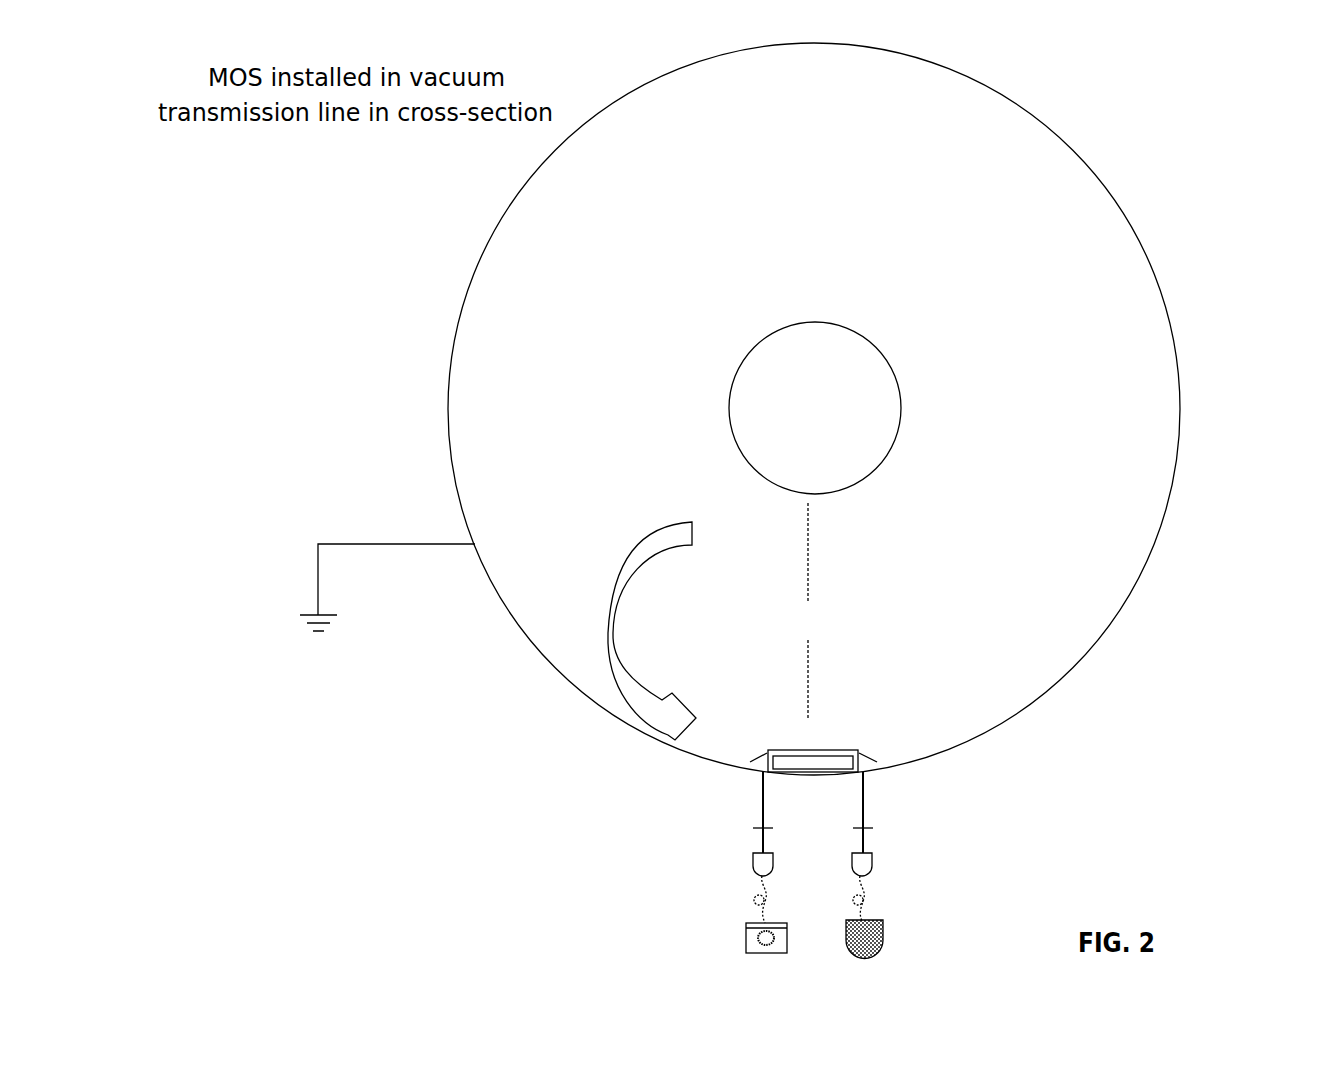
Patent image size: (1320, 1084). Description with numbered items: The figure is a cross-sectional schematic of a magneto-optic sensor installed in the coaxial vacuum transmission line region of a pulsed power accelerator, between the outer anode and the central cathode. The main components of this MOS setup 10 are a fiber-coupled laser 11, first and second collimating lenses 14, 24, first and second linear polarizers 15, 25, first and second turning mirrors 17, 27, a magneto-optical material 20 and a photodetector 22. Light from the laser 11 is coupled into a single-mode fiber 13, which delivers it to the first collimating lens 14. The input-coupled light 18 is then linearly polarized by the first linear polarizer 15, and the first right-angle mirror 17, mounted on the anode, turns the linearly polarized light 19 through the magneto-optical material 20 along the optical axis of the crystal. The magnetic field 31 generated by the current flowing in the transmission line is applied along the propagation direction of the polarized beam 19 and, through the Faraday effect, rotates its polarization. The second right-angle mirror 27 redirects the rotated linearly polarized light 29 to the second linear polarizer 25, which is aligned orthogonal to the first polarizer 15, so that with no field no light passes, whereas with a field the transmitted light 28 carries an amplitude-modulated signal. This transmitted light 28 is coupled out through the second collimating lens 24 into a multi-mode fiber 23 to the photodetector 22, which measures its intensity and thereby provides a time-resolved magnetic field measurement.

The MOS setup 10 is at (1143, 698).
The fiber-coupled laser 11 is at (740, 938).
The single-mode fiber 13 is at (747, 905).
The first collimating lens 14 is at (747, 862).
The first linear polarizer 15 is at (747, 828).
The first right-angle mirror 17 is at (758, 755).
The input-coupled light 18 is at (755, 844).
The linearly polarized light 19 is at (755, 793).
The magneto-optical material 20 is at (792, 742).
The photodetector 22 is at (886, 943).
The multi-mode fiber 23 is at (865, 908).
The second collimating lens 24 is at (875, 865).
The second linear polarizer 25 is at (882, 828).
The second right-angle mirror 27 is at (867, 750).
The transmitted light 28 is at (865, 837).
The rotated linearly polarized light 29 is at (867, 781).
The magnetic field 31 is at (613, 562).